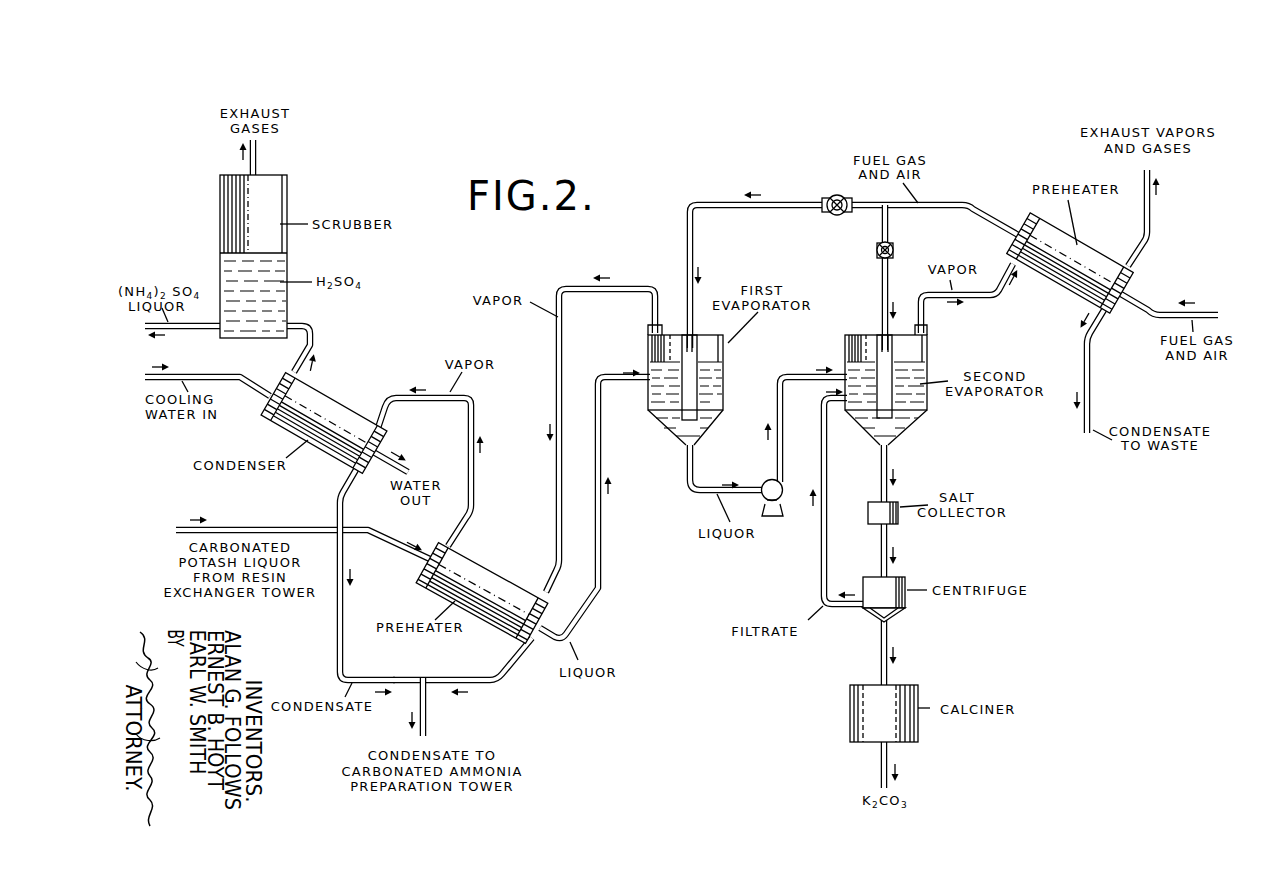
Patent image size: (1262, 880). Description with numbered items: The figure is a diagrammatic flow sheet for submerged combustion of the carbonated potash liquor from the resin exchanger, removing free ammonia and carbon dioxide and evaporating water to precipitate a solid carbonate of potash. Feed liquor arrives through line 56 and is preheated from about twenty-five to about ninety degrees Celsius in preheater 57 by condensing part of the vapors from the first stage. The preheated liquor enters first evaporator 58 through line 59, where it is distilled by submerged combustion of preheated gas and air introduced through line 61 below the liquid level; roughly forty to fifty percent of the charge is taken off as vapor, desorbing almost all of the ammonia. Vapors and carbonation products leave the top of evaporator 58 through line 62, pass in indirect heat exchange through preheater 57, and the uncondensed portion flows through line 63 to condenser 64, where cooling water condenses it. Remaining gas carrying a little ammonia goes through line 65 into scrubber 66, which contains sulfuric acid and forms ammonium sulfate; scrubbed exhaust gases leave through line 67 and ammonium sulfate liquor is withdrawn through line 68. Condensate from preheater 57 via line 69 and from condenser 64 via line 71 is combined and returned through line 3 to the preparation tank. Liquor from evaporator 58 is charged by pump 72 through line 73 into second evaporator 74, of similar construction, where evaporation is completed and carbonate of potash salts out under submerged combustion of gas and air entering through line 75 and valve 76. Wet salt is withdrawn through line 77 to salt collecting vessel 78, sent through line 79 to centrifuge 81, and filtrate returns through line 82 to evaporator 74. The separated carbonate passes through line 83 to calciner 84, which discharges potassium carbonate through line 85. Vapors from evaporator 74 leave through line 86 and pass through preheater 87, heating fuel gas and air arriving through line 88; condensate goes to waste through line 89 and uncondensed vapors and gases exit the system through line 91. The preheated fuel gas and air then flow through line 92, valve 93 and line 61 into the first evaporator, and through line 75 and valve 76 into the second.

The line 3 is at (427, 715).
The line 56 is at (235, 526).
The preheater 57 is at (500, 571).
The first evaporator 58 is at (727, 354).
The line 59 is at (602, 548).
The line 61 is at (686, 254).
The line 62 is at (563, 287).
The line 63 is at (474, 405).
The condenser 64 is at (339, 408).
The line 65 is at (311, 325).
The scrubber 66 is at (220, 210).
The line 67 is at (257, 153).
The line 68 is at (192, 331).
The line 69 is at (500, 674).
The line 71 is at (338, 500).
The pump 72 is at (766, 482).
The line 73 is at (777, 394).
The second evaporator 74 is at (930, 349).
The line 75 is at (881, 290).
The valve 76 is at (876, 250).
The line 77 is at (880, 466).
The salt collecting vessel 78 is at (898, 526).
The line 79 is at (879, 548).
The centrifuge 81 is at (905, 606).
The line 82 is at (822, 556).
The line 83 is at (880, 647).
The calciner 84 is at (850, 708).
The line 85 is at (880, 763).
The line 86 is at (994, 298).
The preheater 87 is at (1058, 282).
The line 88 is at (1152, 302).
The line 89 is at (1092, 368).
The line 91 is at (1152, 226).
The line 92 is at (962, 201).
The valve 93 is at (827, 196).